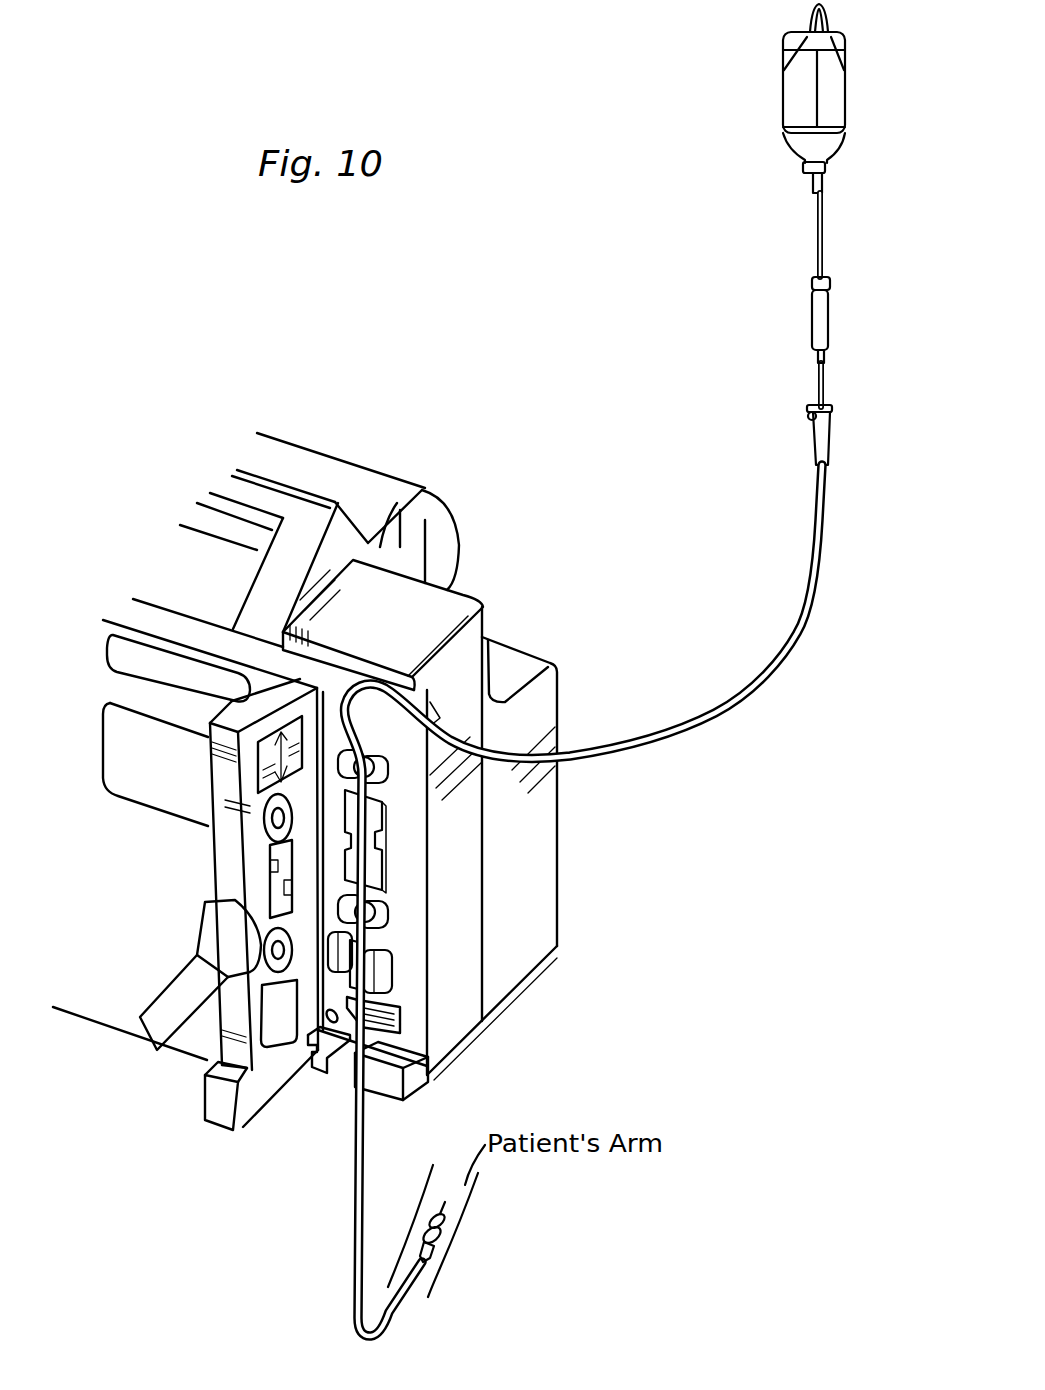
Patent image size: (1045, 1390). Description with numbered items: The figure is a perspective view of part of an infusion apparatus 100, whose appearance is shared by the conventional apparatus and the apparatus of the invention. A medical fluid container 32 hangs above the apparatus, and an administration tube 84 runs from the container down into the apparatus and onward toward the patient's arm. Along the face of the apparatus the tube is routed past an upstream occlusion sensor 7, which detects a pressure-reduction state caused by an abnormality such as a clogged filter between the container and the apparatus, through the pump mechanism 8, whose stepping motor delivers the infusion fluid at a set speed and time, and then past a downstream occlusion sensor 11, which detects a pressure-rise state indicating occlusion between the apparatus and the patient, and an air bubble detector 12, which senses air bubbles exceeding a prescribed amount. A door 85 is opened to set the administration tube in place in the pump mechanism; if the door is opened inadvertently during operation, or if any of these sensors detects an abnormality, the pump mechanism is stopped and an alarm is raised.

The infusion apparatus 100 is at (568, 652).
The medical fluid container 32 is at (848, 87).
The administration tube 84 is at (814, 584).
The door 85 is at (246, 892).
The upstream occlusion sensor 7 is at (388, 778).
The pump mechanism 8 is at (383, 847).
The downstream occlusion sensor 11 is at (388, 920).
The air bubble detector 12 is at (392, 973).